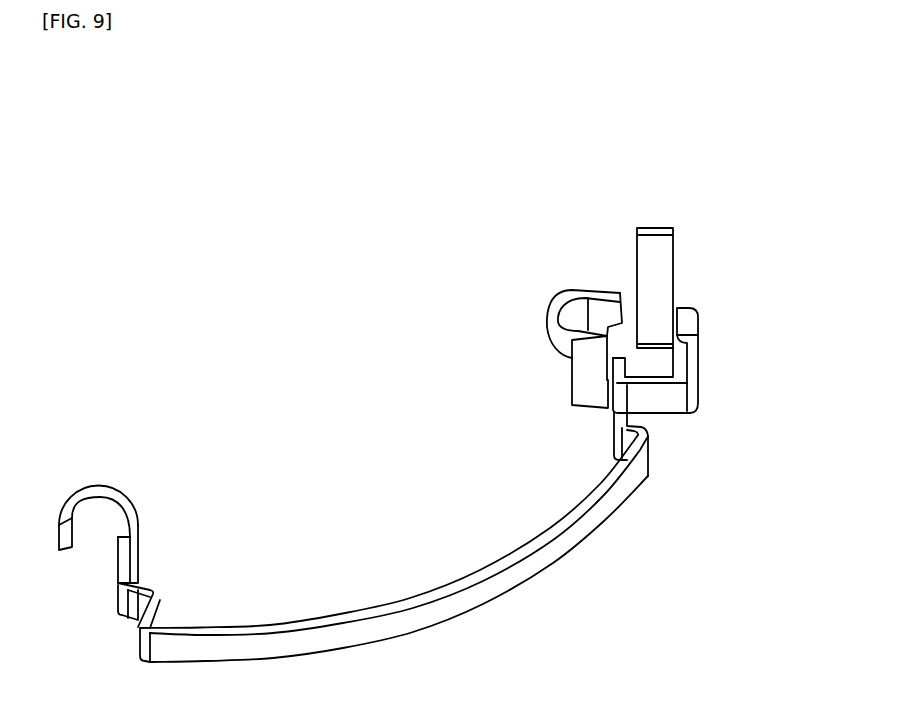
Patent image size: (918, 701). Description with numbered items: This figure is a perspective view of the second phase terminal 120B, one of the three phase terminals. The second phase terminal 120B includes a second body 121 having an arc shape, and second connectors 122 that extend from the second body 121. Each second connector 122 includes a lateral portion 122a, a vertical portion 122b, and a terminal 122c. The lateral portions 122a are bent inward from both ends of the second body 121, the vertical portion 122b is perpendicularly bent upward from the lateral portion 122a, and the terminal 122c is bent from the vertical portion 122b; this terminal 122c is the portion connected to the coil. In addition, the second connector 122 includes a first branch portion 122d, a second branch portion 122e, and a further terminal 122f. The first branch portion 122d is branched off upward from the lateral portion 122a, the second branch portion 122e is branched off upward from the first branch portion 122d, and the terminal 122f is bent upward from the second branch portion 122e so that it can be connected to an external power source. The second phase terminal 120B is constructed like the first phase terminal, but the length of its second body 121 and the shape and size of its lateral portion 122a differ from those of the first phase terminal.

The second phase terminal 120B is at (778, 103).
The second body 121 is at (580, 583).
The second connector 122 is at (487, 330).
The lateral portion 122a is at (148, 591).
The vertical portion 122b is at (123, 550).
The terminal 122c is at (102, 498).
The first branch portion 122d is at (628, 367).
The second branch portion 122e is at (690, 320).
The terminal 122f is at (660, 267).